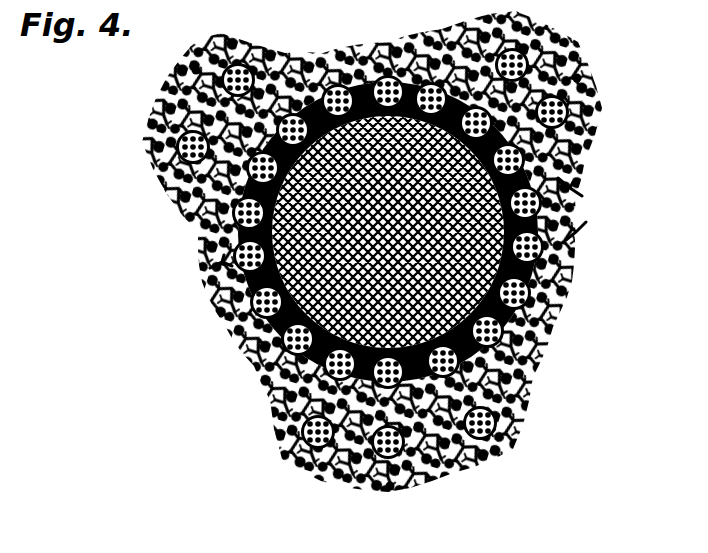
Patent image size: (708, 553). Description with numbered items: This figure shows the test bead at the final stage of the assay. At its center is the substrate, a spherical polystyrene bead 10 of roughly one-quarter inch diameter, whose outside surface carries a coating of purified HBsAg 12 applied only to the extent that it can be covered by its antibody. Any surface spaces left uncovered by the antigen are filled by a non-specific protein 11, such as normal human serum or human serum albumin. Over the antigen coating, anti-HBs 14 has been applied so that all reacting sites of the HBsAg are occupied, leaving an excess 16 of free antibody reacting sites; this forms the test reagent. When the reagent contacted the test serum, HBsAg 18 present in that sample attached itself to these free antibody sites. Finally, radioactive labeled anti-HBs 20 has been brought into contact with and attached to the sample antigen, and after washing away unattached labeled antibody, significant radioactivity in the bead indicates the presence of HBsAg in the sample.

The spherical polystyrene bead 10 is at (416, 183).
The non-specific protein 11 is at (411, 86).
The purified HBsAg 12 is at (250, 315).
The anti-HBs 14 is at (563, 246).
The excess of antibody reacting sites 16 is at (577, 233).
The HBsAg from test serum 18 is at (246, 68).
The radioactive labeled anti-HBs 20 is at (194, 71).